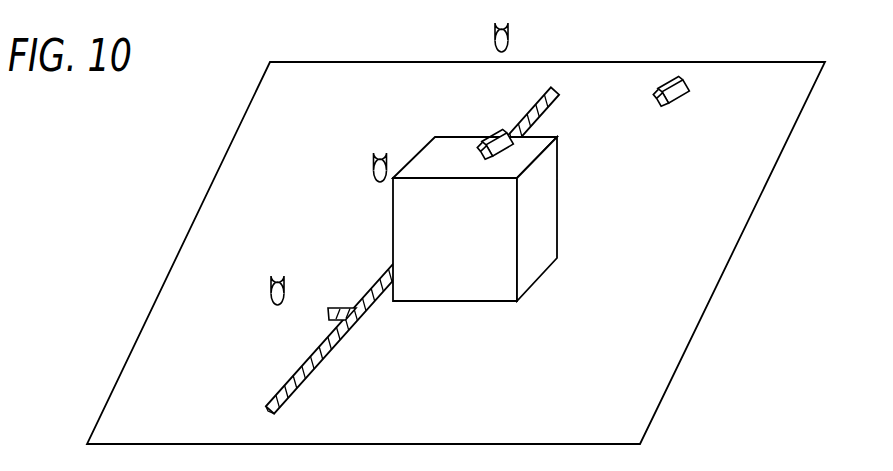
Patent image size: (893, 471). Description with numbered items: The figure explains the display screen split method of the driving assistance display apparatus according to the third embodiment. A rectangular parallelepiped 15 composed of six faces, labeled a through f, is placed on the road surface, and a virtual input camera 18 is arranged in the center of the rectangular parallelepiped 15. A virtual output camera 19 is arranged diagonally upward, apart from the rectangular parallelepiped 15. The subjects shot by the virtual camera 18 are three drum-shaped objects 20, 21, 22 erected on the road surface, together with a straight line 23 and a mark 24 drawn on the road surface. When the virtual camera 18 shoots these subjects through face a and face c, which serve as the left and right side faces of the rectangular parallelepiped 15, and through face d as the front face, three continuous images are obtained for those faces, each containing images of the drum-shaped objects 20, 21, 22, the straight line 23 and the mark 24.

The rectangular parallelepiped 15 is at (442, 301).
The virtual (input) camera 18 is at (517, 144).
The virtual (output) camera 19 is at (666, 80).
The drum-shaped object 20 is at (271, 290).
The drum-shaped object 21 is at (372, 172).
The drum-shaped object 22 is at (509, 38).
The straight line 23 is at (313, 373).
The mark 24 is at (335, 310).